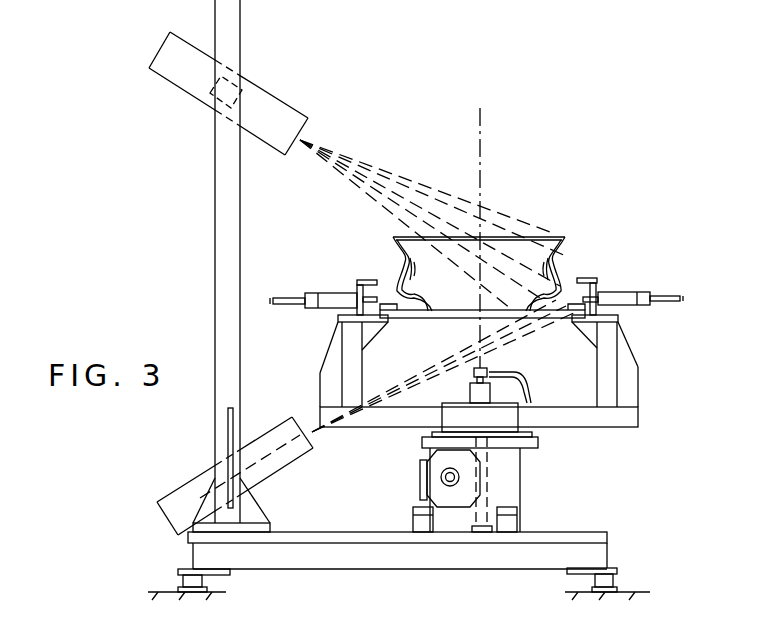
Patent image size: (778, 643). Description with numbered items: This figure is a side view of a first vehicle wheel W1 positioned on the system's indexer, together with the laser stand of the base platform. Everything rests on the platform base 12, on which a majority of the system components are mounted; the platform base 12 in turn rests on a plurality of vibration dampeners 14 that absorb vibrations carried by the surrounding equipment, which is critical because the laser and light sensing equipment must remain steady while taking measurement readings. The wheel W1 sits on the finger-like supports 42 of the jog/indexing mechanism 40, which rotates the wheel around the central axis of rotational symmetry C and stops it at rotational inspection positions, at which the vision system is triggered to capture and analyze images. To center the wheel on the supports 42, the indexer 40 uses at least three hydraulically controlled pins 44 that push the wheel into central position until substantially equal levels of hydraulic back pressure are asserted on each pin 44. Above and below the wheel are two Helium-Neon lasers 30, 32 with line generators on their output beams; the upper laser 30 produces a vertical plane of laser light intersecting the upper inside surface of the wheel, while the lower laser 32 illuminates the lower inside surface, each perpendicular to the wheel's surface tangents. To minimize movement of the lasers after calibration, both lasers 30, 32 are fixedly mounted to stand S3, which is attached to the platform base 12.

The laser stand S3 is at (243, 24).
The upper Helium-Neon laser 30 is at (278, 100).
The central axis of rotational symmetry C is at (479, 225).
The first vehicle wheel W1 is at (393, 243).
The finger-like supports 42 is at (393, 320).
The hydraulically controlled pins 44 is at (362, 280).
The jog/indexing mechanism 40 is at (533, 448).
The lower Helium-Neon laser 32 is at (283, 478).
The platform base 12 is at (587, 533).
The vibration dampeners 14 is at (616, 582).